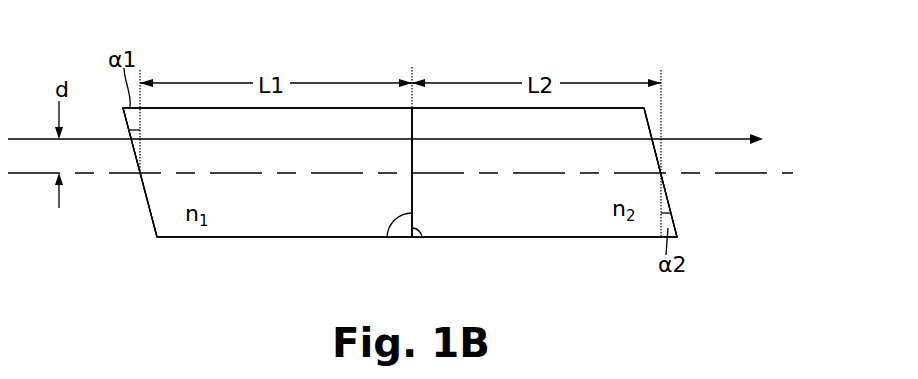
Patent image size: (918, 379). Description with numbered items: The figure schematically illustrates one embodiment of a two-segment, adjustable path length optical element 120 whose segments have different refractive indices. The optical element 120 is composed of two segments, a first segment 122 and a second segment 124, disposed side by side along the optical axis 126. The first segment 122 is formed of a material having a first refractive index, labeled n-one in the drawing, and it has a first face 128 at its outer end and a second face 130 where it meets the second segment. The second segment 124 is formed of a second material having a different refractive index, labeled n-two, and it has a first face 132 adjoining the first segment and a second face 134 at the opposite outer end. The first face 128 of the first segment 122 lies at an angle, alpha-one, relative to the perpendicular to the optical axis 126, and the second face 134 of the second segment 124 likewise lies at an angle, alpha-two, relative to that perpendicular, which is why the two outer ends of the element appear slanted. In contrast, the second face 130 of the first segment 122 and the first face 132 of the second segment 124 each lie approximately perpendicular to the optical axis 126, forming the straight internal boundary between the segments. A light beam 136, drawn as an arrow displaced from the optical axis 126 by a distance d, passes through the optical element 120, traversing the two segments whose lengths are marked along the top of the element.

The optical element 120 is at (698, 69).
The first segment 122 is at (205, 238).
The second segment 124 is at (535, 238).
The optical axis 126 is at (744, 174).
The first face of the first segment 128 is at (149, 206).
The second face of the first segment 130 is at (386, 238).
The first face of the second segment 132 is at (428, 238).
The second face of the second segment 134 is at (675, 227).
The light beam 136 is at (716, 138).